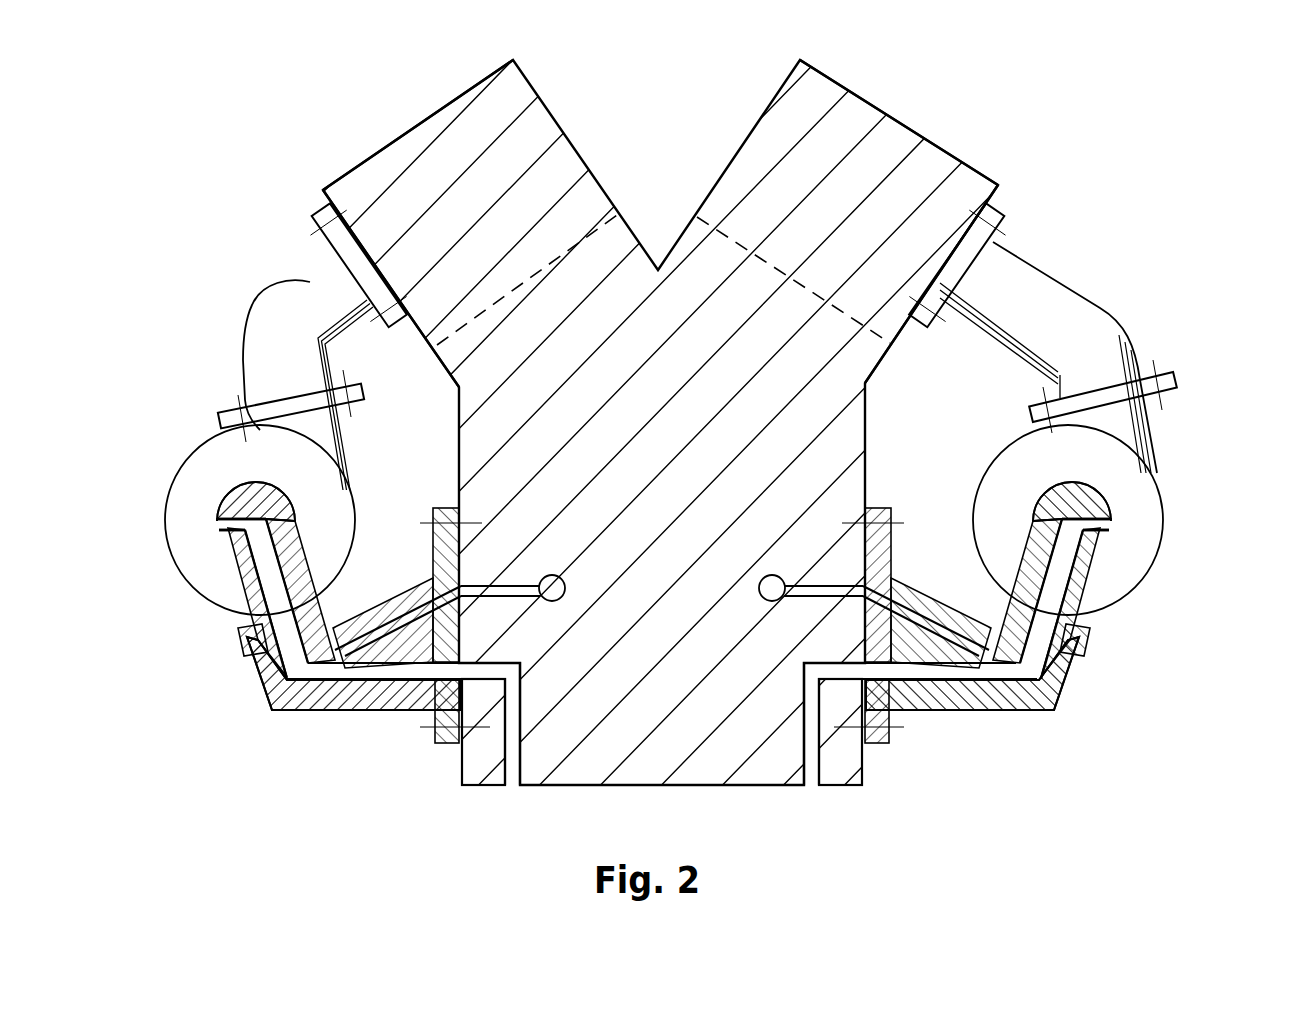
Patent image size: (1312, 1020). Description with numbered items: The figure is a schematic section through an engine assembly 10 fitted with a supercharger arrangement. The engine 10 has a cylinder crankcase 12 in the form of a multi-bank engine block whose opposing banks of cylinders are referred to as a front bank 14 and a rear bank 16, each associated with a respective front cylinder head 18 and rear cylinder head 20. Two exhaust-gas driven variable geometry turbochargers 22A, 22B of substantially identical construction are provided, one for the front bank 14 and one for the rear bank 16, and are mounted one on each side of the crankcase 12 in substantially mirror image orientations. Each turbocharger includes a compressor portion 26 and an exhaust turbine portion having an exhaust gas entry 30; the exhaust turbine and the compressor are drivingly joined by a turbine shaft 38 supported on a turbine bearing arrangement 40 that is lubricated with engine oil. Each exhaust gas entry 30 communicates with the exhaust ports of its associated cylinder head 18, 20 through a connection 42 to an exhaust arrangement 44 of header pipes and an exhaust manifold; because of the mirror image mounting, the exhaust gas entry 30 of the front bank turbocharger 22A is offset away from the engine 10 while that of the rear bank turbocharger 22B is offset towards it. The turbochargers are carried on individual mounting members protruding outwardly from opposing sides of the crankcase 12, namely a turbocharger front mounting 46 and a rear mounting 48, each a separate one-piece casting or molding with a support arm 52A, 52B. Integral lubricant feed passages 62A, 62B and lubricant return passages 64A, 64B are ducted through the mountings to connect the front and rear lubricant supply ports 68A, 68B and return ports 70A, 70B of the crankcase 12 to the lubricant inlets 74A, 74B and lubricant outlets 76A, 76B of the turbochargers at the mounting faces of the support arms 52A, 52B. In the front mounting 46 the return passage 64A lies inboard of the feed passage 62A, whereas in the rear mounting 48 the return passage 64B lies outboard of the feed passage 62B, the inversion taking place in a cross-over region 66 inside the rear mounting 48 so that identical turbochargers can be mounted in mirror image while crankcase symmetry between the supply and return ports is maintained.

The engine assembly 10 is at (226, 191).
The cylinder crankcase 12 is at (676, 444).
The front bank 14 is at (790, 332).
The rear bank 16 is at (546, 332).
The front cylinder head 18 is at (848, 210).
The rear cylinder head 20 is at (480, 217).
The front bank turbocharger 22A is at (1024, 659).
The rear bank turbocharger 22B is at (661, 612).
The compressor portion 26 is at (170, 510).
The exhaust gas entry 30 is at (340, 437).
The turbine shaft 38 is at (262, 505).
The turbine bearing arrangement 40 is at (283, 508).
The connection 42 is at (365, 393).
The exhaust arrangement 44 is at (310, 283).
The turbocharger front mounting 46 is at (1052, 712).
The turbocharger rear mounting 48 is at (300, 712).
The support arm of front mounting 52A is at (1005, 703).
The support arm of rear mounting 52B is at (448, 735).
The lubricant feed passage of front mounting 62A is at (914, 628).
The lubricant feed passage of rear mounting 62B is at (350, 660).
The lubricant return passage of front mounting 64A is at (968, 712).
The lubricant return passage of rear mounting 64B is at (385, 712).
The cross-over region 66 is at (255, 677).
The front lubricant supply port 68A is at (773, 575).
The rear lubricant supply port 68B is at (553, 578).
The front lubricant return port 70A is at (806, 762).
The rear lubricant return port 70B is at (520, 765).
The lubricant inlet of front turbocharger 74A is at (1018, 555).
The lubricant inlet of rear turbocharger 74B is at (235, 585).
The lubricant outlet of front turbocharger 76A is at (1090, 618).
The lubricant outlet of rear turbocharger 76B is at (240, 598).